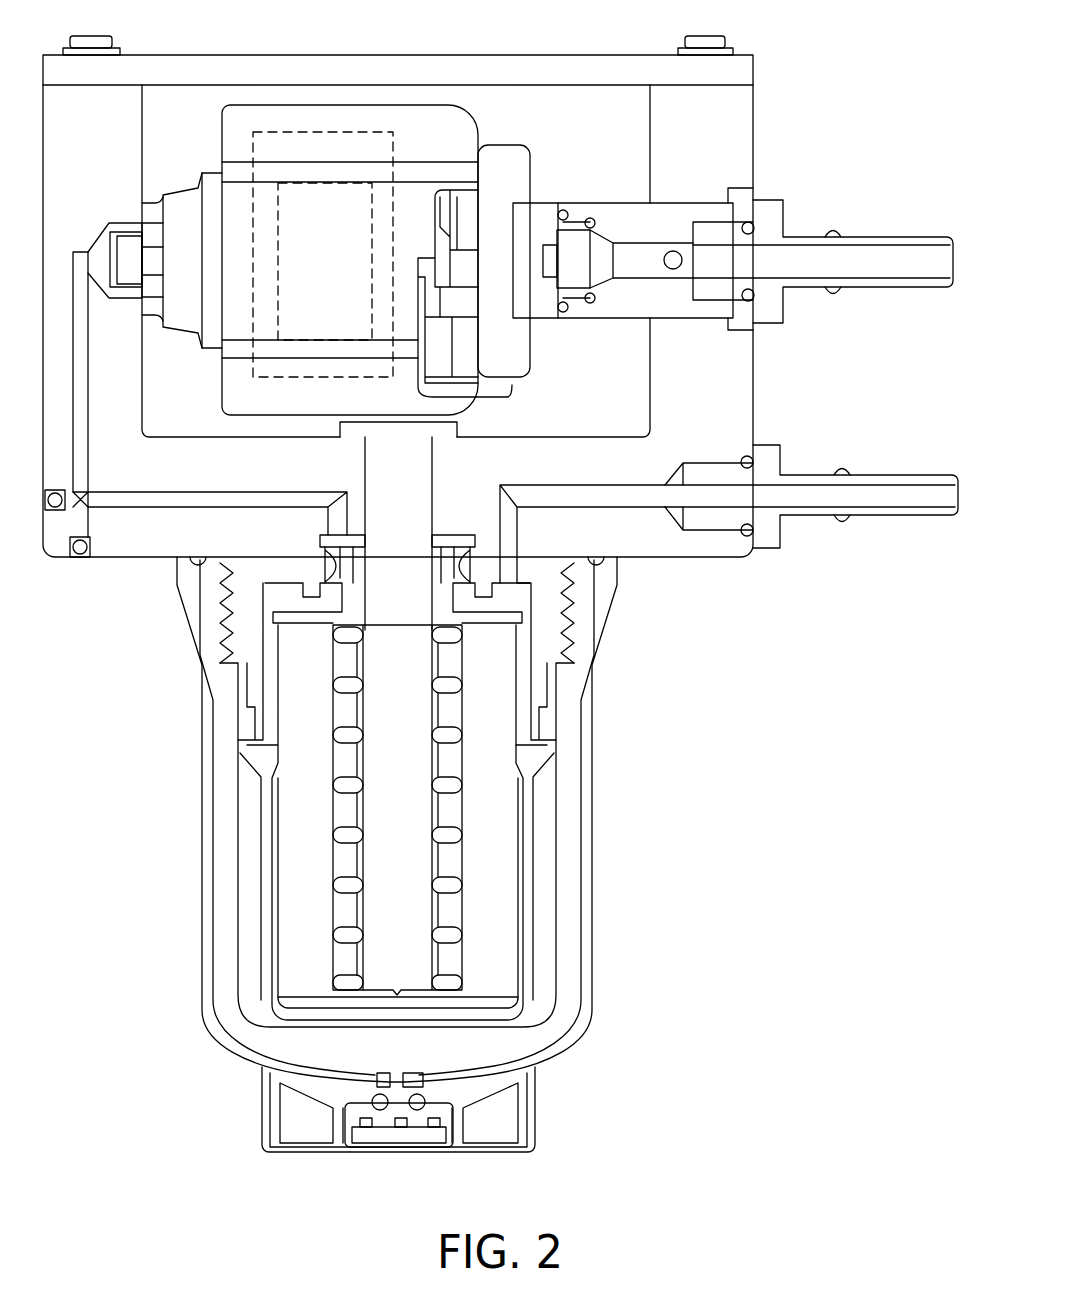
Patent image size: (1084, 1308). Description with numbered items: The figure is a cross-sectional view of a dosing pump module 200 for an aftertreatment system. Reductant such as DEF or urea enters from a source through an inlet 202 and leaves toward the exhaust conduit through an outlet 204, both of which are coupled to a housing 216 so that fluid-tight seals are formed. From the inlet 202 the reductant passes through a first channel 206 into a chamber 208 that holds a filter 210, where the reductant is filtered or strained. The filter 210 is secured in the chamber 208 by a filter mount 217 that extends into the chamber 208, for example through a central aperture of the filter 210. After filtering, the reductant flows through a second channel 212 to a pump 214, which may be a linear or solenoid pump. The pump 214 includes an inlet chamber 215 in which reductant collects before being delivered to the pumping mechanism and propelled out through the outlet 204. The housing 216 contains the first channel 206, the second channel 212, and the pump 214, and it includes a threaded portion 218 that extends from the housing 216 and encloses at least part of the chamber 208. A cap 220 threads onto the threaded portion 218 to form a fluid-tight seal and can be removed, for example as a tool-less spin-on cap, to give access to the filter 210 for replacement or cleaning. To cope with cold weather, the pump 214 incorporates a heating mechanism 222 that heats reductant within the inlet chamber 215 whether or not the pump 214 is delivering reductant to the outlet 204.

The dosing pump module 200 is at (500, 576).
The inlet 202 is at (885, 502).
The outlet 204 is at (893, 240).
The first channel 206 is at (638, 497).
The chamber 208 is at (265, 690).
The filter 210 is at (504, 918).
The second channel 212 is at (138, 508).
The pump 214 is at (385, 118).
The inlet chamber 215 is at (378, 203).
The housing 216 is at (737, 130).
The filter mount 217 is at (418, 478).
The threaded portion 218 is at (572, 628).
The cap 220 is at (585, 778).
The heating mechanism 222 is at (318, 130).